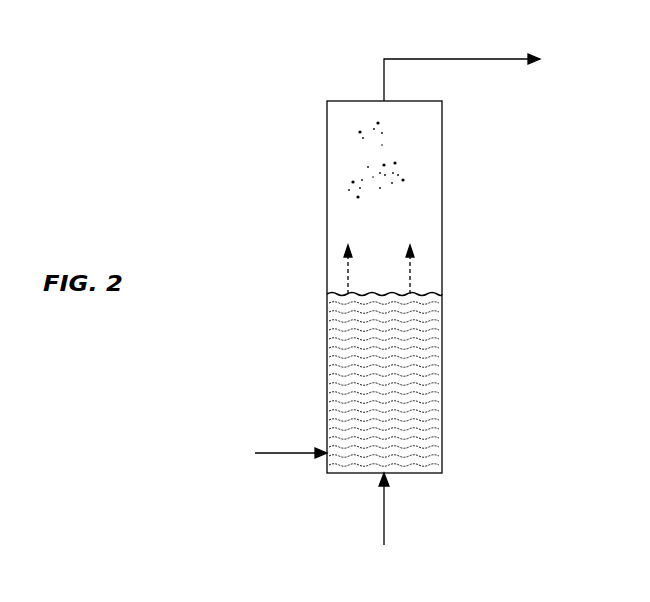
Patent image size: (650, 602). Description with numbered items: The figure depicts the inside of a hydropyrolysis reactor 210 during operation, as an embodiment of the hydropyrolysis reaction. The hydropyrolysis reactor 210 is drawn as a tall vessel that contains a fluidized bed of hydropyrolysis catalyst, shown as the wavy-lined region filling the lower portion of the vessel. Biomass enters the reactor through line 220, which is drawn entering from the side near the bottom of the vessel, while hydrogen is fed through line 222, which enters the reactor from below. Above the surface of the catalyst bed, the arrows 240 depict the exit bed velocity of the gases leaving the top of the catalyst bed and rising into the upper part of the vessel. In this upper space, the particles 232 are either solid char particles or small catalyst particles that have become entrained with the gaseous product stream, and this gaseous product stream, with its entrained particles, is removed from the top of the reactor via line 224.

The hydropyrolysis reactor 210 is at (443, 247).
The line 220 is at (280, 452).
The line 222 is at (385, 508).
The line 224 is at (430, 58).
The particles 232 is at (398, 168).
The arrows 240 is at (348, 273).